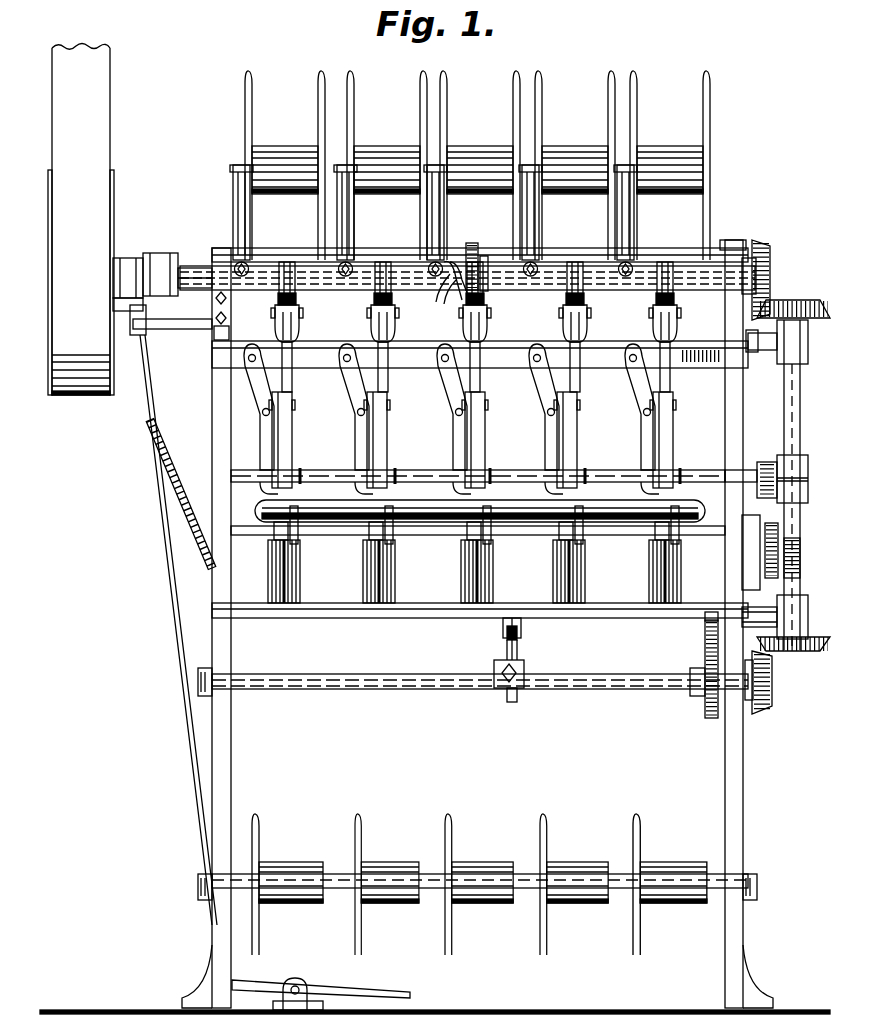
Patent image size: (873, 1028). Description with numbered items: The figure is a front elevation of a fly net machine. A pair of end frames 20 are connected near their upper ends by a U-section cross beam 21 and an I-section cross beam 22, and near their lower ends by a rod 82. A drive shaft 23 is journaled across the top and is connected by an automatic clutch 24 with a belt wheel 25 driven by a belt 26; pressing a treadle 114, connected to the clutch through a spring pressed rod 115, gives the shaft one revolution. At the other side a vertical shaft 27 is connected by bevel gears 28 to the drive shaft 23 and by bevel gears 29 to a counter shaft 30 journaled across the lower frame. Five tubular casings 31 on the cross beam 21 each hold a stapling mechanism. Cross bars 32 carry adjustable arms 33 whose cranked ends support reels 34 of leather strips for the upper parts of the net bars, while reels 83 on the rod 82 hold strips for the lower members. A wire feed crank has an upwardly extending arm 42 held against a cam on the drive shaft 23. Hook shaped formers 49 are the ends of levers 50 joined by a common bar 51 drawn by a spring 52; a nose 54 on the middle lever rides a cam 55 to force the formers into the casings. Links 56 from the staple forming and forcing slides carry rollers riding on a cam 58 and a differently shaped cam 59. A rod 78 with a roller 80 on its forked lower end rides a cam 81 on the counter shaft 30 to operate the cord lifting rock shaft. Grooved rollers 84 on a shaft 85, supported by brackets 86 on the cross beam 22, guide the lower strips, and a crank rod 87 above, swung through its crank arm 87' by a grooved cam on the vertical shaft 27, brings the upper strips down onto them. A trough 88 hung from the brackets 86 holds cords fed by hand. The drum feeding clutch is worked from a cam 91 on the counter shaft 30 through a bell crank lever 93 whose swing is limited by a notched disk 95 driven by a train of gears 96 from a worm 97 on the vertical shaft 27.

The end frames 20 is at (226, 768).
The cross beam 21 is at (230, 417).
The cross beam 22 is at (441, 599).
The drive shaft 23 is at (605, 283).
The automatic clutch 24 is at (164, 258).
The belt wheel 25 is at (112, 193).
The belt 26 is at (102, 108).
The vertical shaft 27 is at (784, 412).
The bevel gears 28 is at (778, 296).
The bevel gears 29 is at (776, 660).
The counter shaft 30 is at (437, 682).
The tubular casings 31 is at (572, 420).
The cross bars 32 is at (565, 255).
The arms 33 is at (633, 216).
The reels 34 is at (276, 158).
The upwardly extending arm 42 is at (506, 307).
The hook shaped former 49 is at (458, 455).
The levers 50 is at (448, 394).
The common bar 51 is at (396, 345).
The spring 52 is at (688, 348).
The nose 54 is at (436, 290).
The cam 55 is at (456, 264).
The links 56 is at (482, 328).
The cam 58 is at (471, 243).
The cam 59 is at (484, 258).
The rod 78 is at (504, 623).
The roller 80 is at (518, 634).
The cam 81 is at (516, 672).
The rod 82 is at (527, 878).
The reels 83 is at (378, 868).
The grooved rollers 84 is at (300, 548).
The rod or shaft 85 is at (430, 532).
The brackets 86 is at (648, 532).
The grooved roller or crank rod 87 is at (478, 458).
The crank arm 87' is at (786, 470).
The trough 88 is at (518, 505).
The cam 91 is at (706, 652).
The bell crank lever 93 is at (705, 618).
The disk 95 is at (775, 613).
The train of gears 96 is at (770, 530).
The worm 97 is at (800, 558).
The treadle 114 is at (395, 992).
The spring pressed rod 115 is at (178, 626).